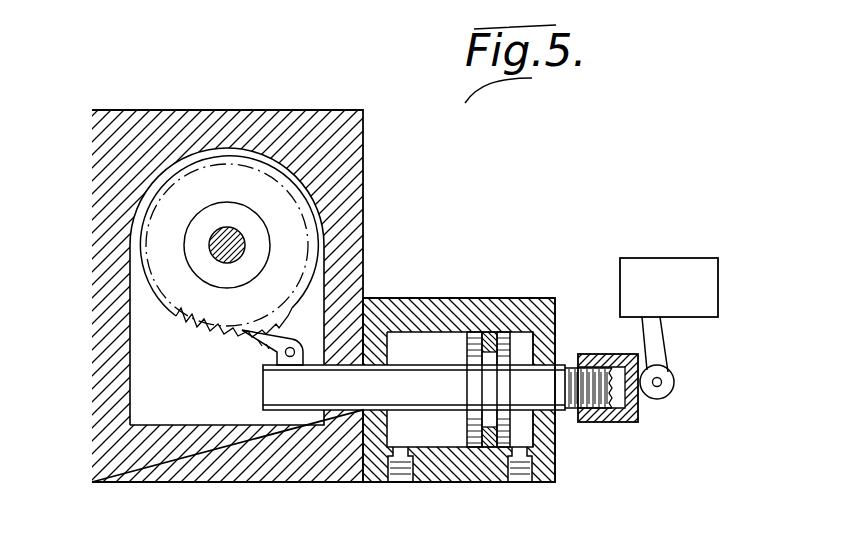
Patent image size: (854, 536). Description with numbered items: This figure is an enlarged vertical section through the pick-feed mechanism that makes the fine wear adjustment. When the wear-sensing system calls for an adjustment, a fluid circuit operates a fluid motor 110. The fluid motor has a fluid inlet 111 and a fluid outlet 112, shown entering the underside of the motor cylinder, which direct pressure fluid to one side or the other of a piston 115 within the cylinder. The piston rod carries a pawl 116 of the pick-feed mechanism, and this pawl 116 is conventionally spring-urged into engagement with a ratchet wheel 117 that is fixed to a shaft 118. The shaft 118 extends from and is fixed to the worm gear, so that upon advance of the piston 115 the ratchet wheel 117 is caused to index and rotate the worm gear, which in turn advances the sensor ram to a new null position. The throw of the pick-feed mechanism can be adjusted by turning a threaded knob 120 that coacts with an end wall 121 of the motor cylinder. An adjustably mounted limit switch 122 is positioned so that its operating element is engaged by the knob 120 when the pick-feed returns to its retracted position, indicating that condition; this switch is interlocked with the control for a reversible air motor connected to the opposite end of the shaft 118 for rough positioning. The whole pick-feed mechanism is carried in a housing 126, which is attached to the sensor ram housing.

The fluid motor 110 is at (464, 305).
The fluid inlet 111 is at (522, 476).
The fluid outlet 112 is at (403, 476).
The piston 115 is at (467, 350).
The pawl 116 is at (256, 347).
The ratchet wheel 117 is at (210, 327).
The shaft 118 is at (227, 234).
The threaded knob 120 is at (605, 423).
The end wall 121 is at (557, 323).
The limit switch 122 is at (692, 305).
The housing 126 is at (74, 415).